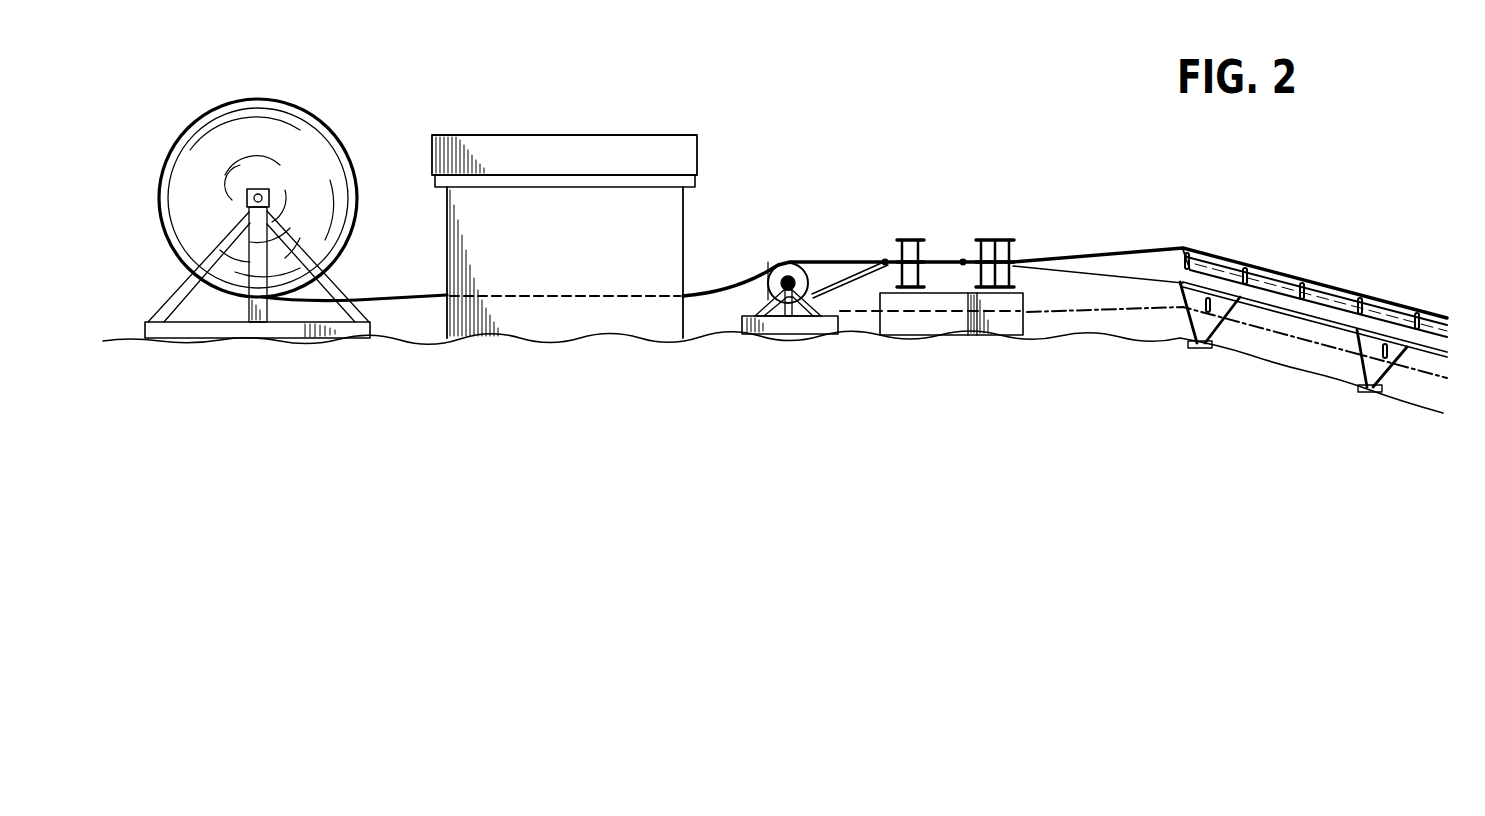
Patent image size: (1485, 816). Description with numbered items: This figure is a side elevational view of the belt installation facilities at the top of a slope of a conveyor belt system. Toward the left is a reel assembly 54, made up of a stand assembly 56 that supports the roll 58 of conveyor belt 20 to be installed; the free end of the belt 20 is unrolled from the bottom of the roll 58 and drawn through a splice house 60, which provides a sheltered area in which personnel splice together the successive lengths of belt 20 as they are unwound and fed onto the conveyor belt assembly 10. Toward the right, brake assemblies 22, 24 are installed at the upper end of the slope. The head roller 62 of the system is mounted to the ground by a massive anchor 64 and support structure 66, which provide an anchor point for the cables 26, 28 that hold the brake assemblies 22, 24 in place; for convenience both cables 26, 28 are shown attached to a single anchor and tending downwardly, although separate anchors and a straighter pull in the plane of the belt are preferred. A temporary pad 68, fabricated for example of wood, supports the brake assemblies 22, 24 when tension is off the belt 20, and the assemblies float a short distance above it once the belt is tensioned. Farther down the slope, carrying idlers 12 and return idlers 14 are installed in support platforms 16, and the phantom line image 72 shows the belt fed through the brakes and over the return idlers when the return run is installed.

The conveyor belt assembly 10 is at (1284, 298).
The carrying idlers 12 is at (1340, 290).
The return idlers 14 is at (1180, 340).
The support platforms 16 is at (1282, 313).
The conveyor belt 20 is at (420, 303).
The brake assembly 22 is at (922, 229).
The brake assembly 24 is at (1006, 229).
The cable 26 is at (832, 260).
The cable 28 is at (866, 277).
The reel assembly 54 is at (261, 216).
The stand assembly 56 is at (244, 308).
The roll 58 is at (322, 120).
The splice house 60 is at (585, 150).
The head roller 62 is at (766, 284).
The anchor 64 is at (783, 327).
The support structure 66 is at (793, 310).
The temporary pad 68 is at (960, 325).
The phantom line image 72 is at (1102, 313).